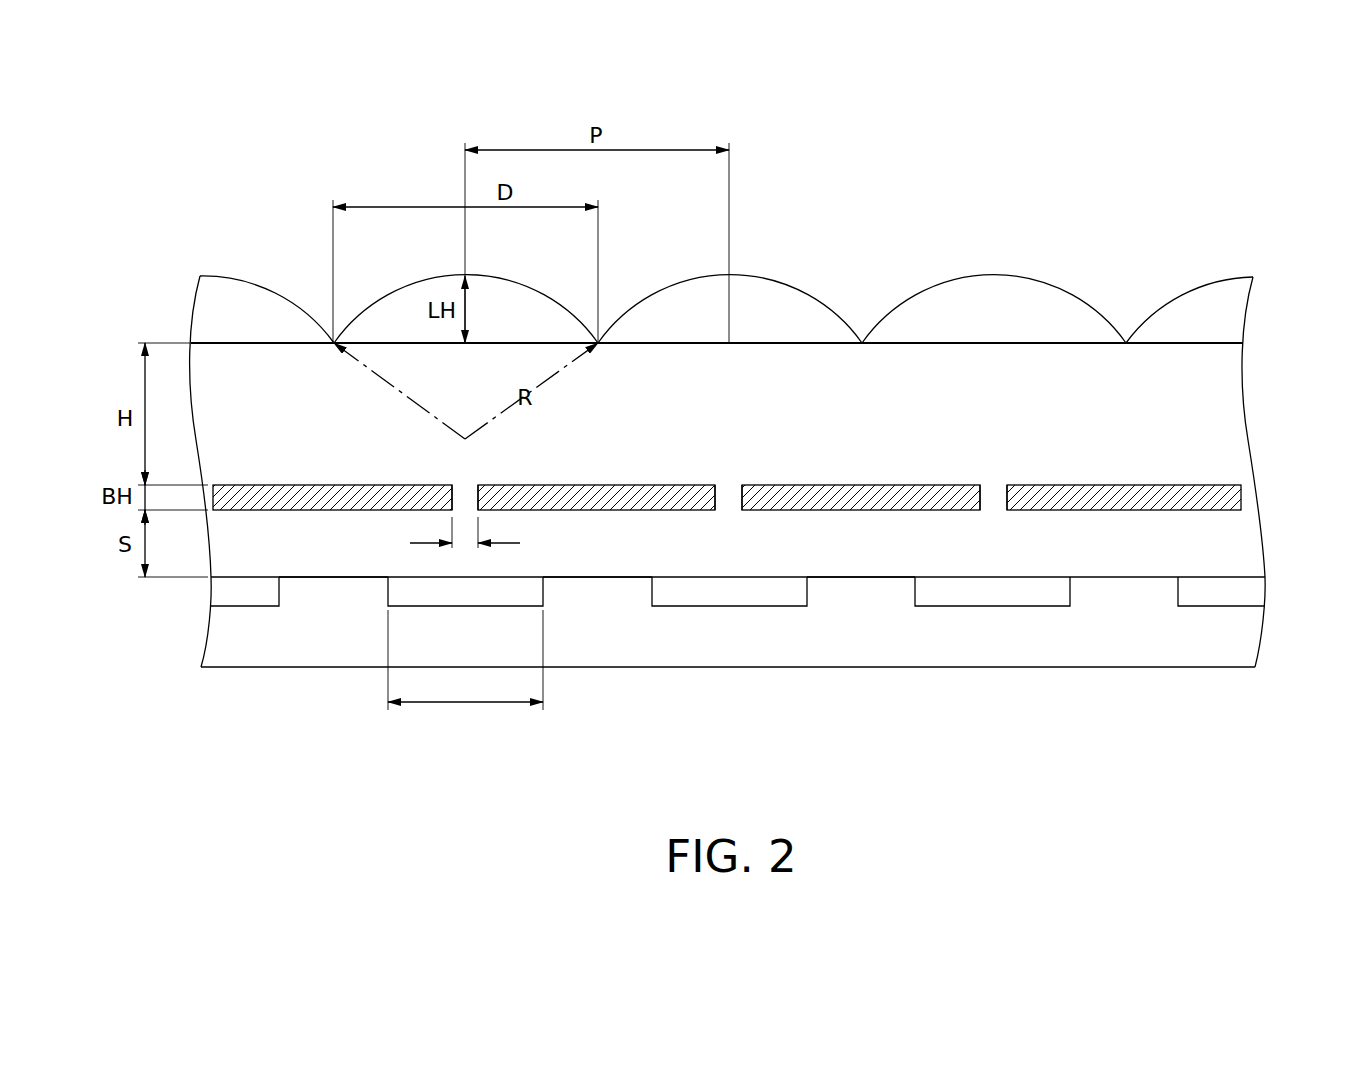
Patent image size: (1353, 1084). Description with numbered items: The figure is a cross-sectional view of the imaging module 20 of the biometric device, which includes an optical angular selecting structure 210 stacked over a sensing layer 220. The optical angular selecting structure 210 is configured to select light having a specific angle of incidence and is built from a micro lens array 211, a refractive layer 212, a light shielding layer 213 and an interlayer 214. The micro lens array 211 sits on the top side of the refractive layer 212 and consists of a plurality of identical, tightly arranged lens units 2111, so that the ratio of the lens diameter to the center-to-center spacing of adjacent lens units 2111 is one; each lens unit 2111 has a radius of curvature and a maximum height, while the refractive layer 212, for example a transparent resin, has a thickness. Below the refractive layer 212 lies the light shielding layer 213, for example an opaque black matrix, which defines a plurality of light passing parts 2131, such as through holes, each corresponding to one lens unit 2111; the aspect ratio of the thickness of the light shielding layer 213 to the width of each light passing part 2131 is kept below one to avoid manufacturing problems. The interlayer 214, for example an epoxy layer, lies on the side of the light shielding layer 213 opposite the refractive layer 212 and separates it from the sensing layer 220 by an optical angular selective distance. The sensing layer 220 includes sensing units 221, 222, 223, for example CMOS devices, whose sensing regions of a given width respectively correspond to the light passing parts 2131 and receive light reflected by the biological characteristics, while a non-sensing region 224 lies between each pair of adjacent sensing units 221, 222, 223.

The imaging module 20 is at (178, 165).
The optical angular selecting structure 210 is at (171, 291).
The micro lens array 211 is at (726, 260).
The lens unit 2111 is at (950, 224).
The refractive layer 212 is at (1216, 411).
The light shielding layer 213 is at (776, 506).
The light passing part 2131 is at (467, 494).
The interlayer 214 is at (1223, 540).
The sensing layer 220 is at (733, 646).
The sensing unit 221 is at (530, 590).
The sensing unit 222 is at (747, 592).
The sensing unit 223 is at (972, 588).
The non-sensing region 224 is at (331, 575).